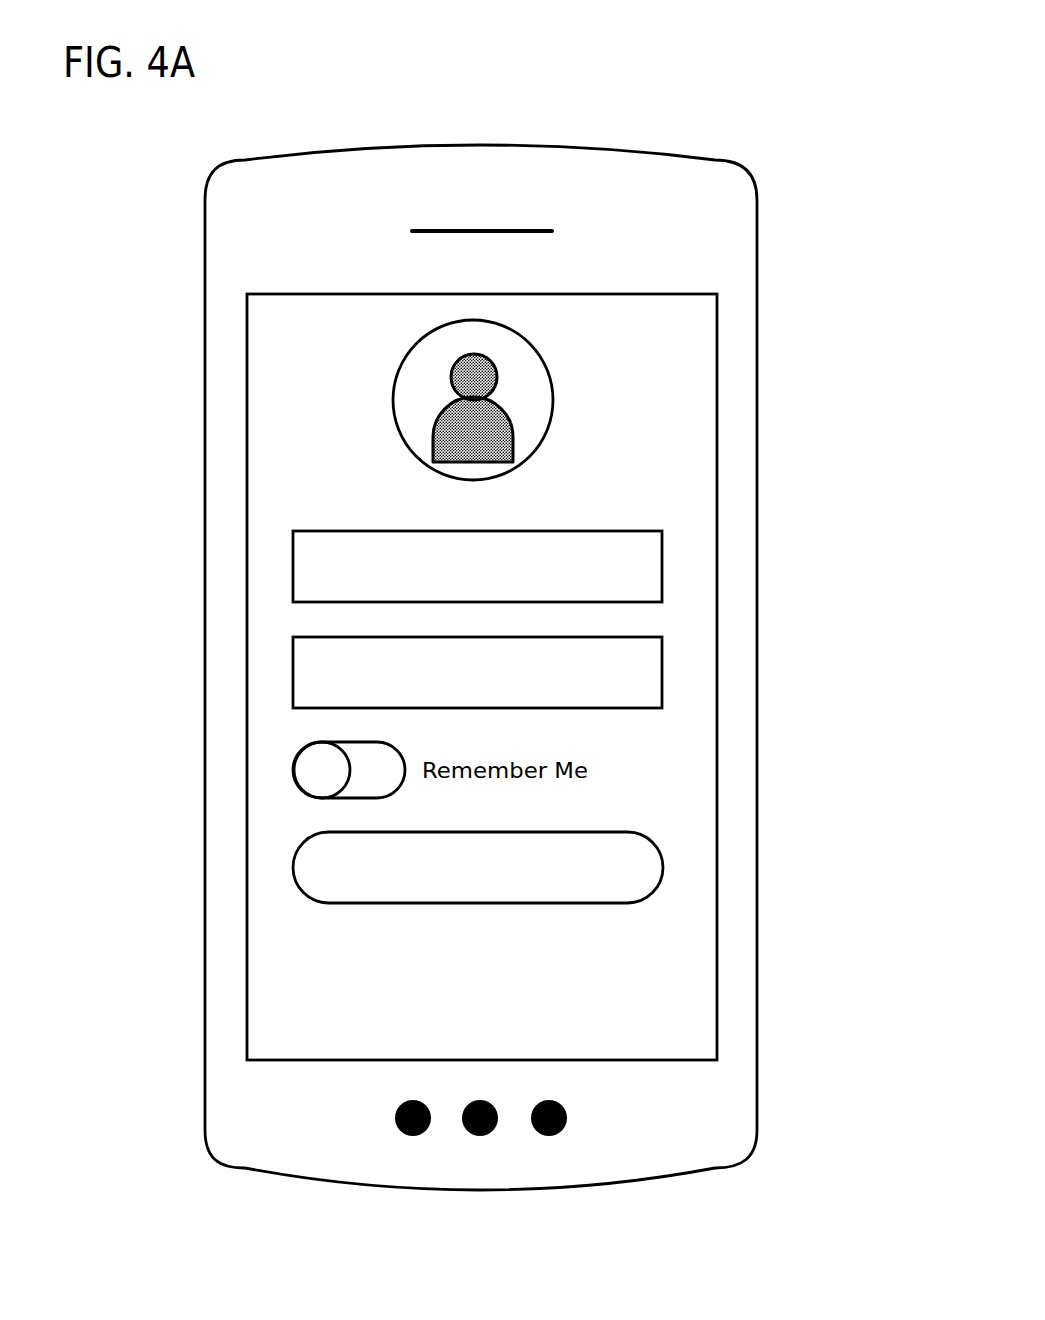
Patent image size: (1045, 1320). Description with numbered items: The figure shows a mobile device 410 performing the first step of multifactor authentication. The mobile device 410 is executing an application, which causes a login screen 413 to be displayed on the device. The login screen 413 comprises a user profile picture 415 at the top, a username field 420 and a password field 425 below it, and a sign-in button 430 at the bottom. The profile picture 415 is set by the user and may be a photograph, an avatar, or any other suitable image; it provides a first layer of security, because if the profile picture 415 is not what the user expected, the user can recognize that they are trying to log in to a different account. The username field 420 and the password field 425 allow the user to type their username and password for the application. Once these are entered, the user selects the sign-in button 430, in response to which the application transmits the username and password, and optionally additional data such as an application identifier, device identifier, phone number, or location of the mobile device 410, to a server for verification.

The mobile device 410 is at (463, 142).
The login screen 413 is at (717, 321).
The user profile picture 415 is at (393, 400).
The username field 420 is at (293, 567).
The password field 425 is at (293, 673).
The sign-in button 430 is at (293, 865).